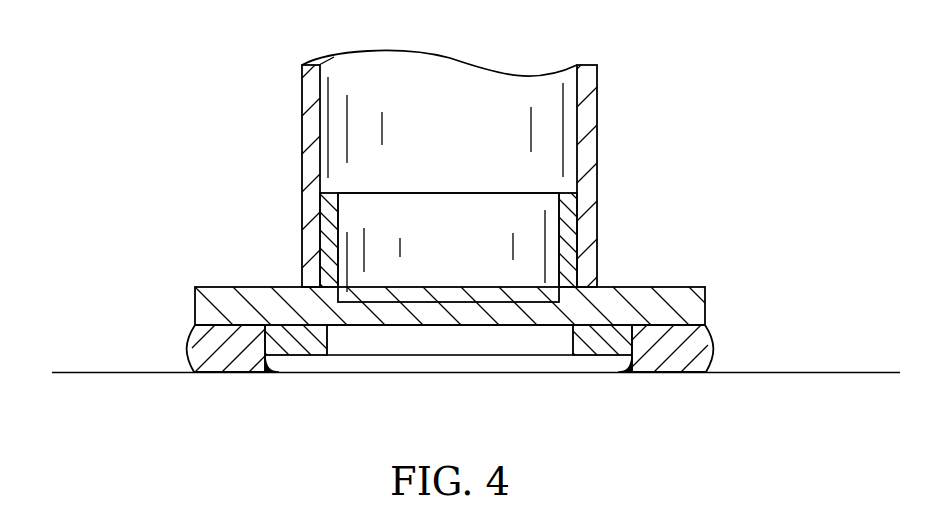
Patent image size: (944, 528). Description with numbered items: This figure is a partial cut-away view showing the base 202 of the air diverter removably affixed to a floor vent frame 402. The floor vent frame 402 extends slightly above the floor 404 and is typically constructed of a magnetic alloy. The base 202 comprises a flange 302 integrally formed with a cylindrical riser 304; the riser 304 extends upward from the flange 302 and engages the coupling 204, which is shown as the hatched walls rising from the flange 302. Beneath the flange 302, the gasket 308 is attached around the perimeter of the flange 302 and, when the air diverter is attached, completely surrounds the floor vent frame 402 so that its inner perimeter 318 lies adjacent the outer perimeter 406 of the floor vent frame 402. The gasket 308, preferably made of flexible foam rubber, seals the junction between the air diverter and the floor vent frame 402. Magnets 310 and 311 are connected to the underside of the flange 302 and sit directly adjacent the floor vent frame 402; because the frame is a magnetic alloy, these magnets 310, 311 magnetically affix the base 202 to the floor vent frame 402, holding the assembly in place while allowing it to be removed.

The base 202 is at (207, 287).
The coupling 204 is at (597, 133).
The flange 302 is at (453, 313).
The riser 304 is at (340, 222).
The gasket 308 is at (197, 352).
The magnet 310 is at (593, 347).
The magnet 311 is at (288, 345).
The inner perimeter 318 is at (270, 323).
The floor vent frame 402 is at (415, 362).
The floor 404 is at (83, 372).
The outer perimeter 406 is at (273, 372).